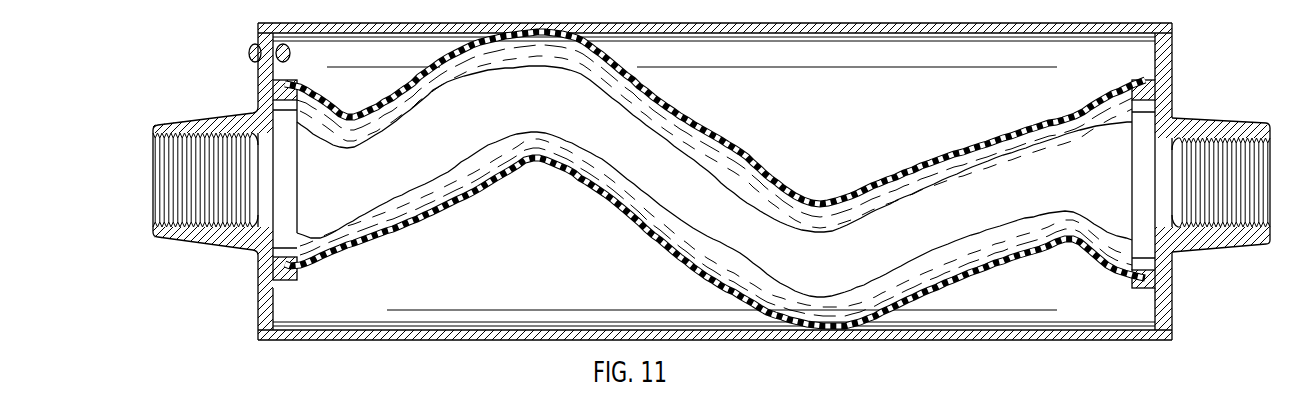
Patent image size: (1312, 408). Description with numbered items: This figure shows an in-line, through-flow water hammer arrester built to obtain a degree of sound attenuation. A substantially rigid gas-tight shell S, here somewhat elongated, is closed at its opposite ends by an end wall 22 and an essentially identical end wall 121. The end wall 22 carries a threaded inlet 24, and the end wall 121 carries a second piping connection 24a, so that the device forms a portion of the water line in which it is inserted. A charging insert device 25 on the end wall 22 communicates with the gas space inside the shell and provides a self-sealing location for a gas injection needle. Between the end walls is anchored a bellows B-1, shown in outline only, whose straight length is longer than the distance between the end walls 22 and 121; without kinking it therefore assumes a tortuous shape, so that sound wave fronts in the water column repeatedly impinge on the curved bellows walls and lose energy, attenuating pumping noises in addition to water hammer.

The shell S is at (907, 23).
The end wall 22 is at (257, 288).
The inlet 24 is at (222, 116).
The second piping connection 24a is at (1222, 121).
The charging insert device 25 is at (249, 51).
The end wall 121 is at (1165, 89).
The bellows B-1 is at (779, 171).